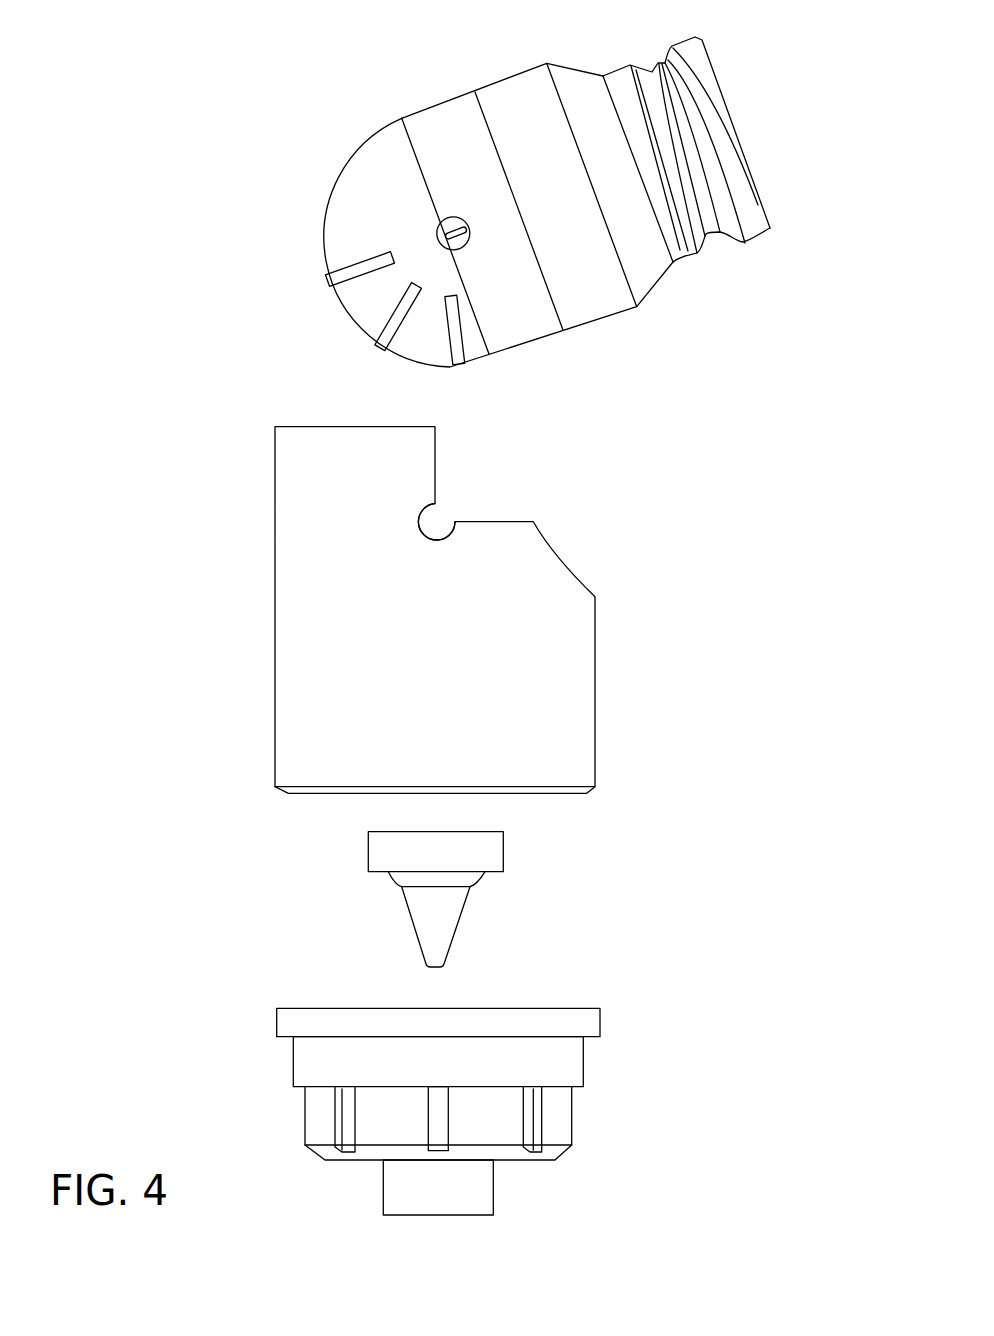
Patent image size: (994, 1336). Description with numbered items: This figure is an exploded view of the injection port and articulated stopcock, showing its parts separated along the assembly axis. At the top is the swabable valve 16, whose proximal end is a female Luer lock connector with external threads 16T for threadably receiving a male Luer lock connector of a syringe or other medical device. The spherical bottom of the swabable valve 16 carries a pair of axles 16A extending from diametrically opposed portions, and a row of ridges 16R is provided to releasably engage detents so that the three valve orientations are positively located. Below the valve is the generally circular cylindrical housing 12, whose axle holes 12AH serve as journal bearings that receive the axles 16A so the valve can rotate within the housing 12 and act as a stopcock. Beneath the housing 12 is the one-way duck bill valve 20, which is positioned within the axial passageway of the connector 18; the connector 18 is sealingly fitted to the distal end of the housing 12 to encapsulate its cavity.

The housing 12 is at (340, 653).
The axle holes 12AH is at (423, 528).
The swabable valve 16 is at (590, 297).
The axles 16A is at (443, 230).
The ridges 16R is at (453, 347).
The external threads 16T is at (747, 223).
The connector 18 is at (552, 1057).
The one-way duck bill valve 20 is at (442, 915).